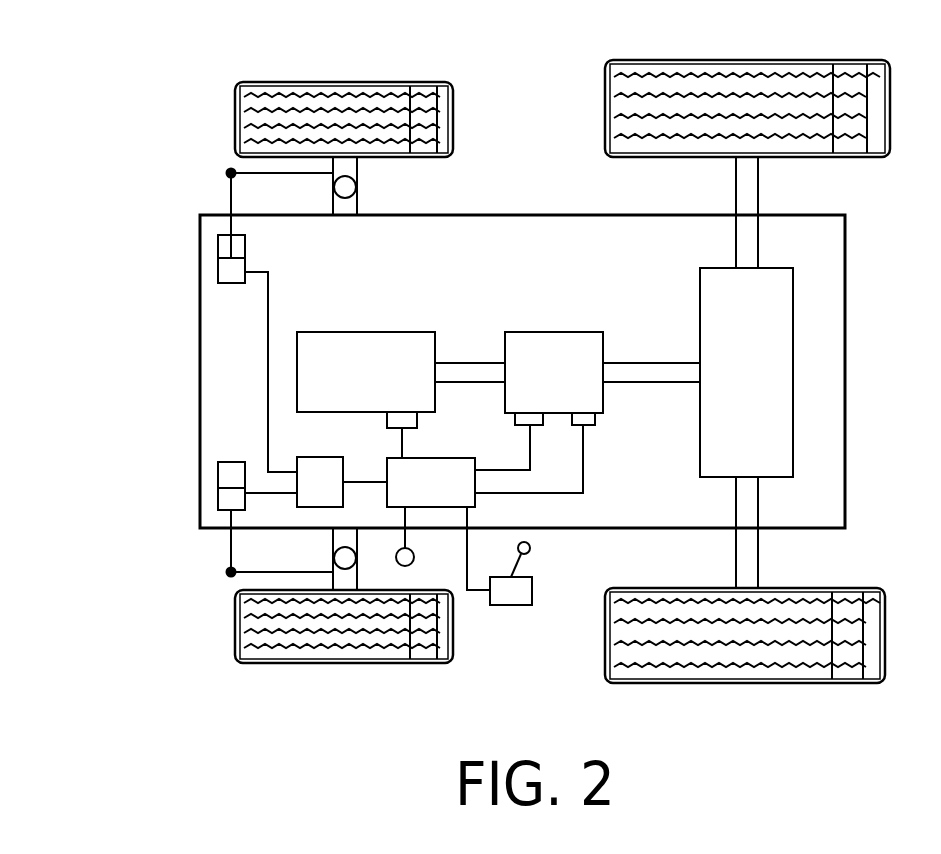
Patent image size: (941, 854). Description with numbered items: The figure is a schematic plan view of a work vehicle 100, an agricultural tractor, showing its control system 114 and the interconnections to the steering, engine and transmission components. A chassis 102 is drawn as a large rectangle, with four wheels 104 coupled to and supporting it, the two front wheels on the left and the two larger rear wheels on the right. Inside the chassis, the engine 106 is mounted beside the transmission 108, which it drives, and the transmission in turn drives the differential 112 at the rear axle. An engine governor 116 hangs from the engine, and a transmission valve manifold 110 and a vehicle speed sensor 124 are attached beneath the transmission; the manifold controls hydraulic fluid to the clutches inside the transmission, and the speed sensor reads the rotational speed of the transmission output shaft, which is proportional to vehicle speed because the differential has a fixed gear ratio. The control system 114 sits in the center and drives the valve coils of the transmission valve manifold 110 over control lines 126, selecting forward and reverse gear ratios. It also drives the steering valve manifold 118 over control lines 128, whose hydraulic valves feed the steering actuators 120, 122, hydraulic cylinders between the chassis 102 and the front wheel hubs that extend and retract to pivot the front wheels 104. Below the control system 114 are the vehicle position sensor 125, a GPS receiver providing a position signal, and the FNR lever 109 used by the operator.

The work vehicle 100 is at (148, 226).
The chassis 102 is at (200, 397).
The front wheels 104 is at (233, 108).
The engine 106 is at (347, 386).
The transmission 108 is at (535, 386).
The FNR lever 109 is at (516, 606).
The transmission valve manifold 110 is at (515, 422).
The differential 112 is at (727, 386).
The control system 114 is at (412, 495).
The engine governor 116 is at (387, 419).
The steering valve manifold 118 is at (323, 508).
The steering actuator 120 is at (238, 462).
The steering actuator 122 is at (233, 285).
The vehicle speed sensor 124 is at (597, 420).
The vehicle position sensor 125 is at (406, 566).
The control lines 126 is at (528, 452).
The control lines 128 is at (365, 482).